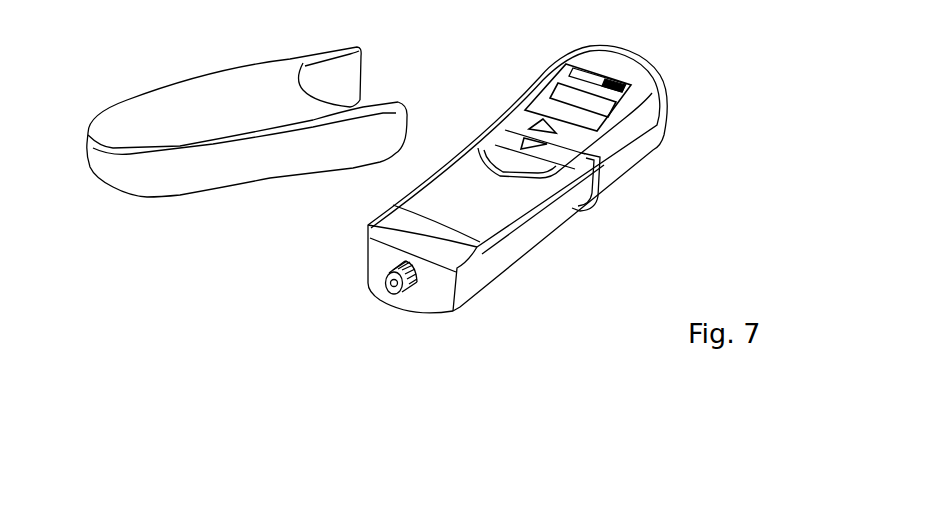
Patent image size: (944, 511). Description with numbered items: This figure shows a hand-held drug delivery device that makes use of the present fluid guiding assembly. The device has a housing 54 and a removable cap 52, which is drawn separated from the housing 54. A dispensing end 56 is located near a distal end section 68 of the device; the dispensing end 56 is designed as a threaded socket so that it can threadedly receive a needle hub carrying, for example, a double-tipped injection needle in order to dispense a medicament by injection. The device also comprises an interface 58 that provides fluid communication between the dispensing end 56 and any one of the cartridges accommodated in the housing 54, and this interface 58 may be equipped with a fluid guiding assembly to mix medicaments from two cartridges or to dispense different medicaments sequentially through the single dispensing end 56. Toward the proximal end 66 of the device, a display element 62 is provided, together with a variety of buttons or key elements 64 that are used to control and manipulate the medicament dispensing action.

The removable cap 52 is at (222, 68).
The housing 54 is at (527, 243).
The dispensing end 56 is at (390, 295).
The interface 58 is at (368, 232).
The display element 62 is at (601, 104).
The buttons or key elements 64 is at (522, 113).
The proximal end 66 is at (713, 73).
The distal end section 68 is at (352, 365).